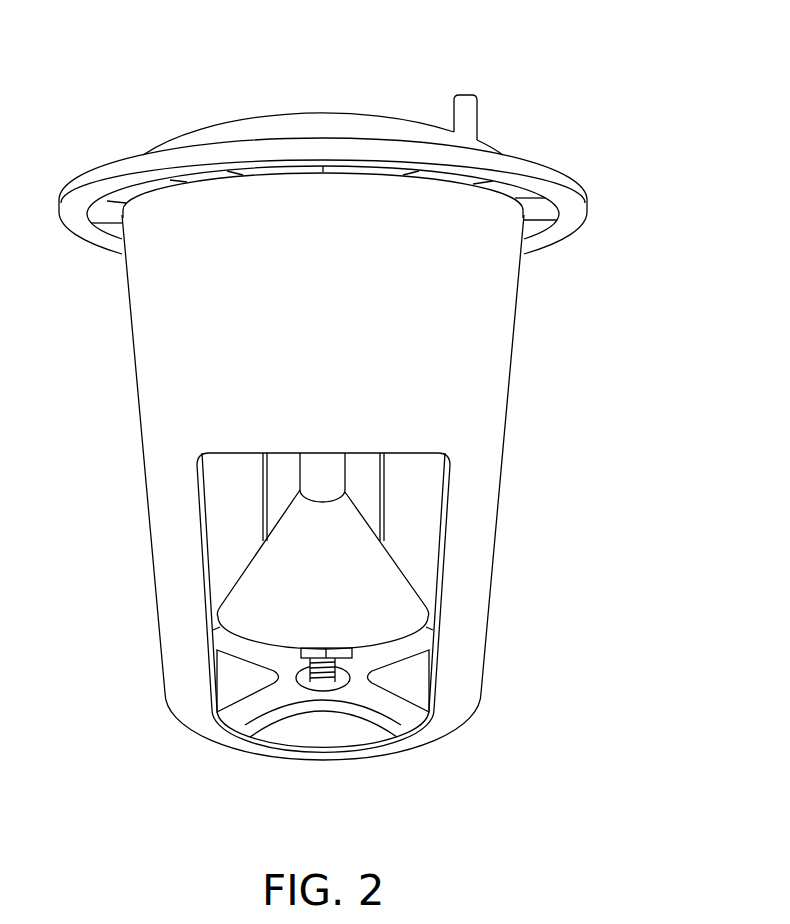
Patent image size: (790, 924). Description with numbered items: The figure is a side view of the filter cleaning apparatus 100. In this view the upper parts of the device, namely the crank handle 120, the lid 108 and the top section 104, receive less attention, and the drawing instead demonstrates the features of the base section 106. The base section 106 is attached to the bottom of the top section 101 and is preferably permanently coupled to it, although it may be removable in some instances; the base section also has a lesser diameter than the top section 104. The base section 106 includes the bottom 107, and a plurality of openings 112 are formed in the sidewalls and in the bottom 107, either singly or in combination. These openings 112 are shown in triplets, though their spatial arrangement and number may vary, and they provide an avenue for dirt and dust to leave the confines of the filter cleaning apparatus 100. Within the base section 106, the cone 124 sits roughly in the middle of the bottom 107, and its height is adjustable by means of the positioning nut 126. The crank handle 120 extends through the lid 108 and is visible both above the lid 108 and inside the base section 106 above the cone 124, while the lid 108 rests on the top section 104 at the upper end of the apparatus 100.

The filter cleaning apparatus 100 is at (185, 22).
The top section 101 is at (78, 227).
The top section 104 is at (92, 168).
The base section 106 is at (502, 342).
The bottom 107 is at (248, 713).
The lid 108 is at (213, 120).
The openings 112 is at (220, 473).
The crank handle 120 is at (473, 93).
The cone 124 is at (390, 597).
The positioning nut 126 is at (348, 658).